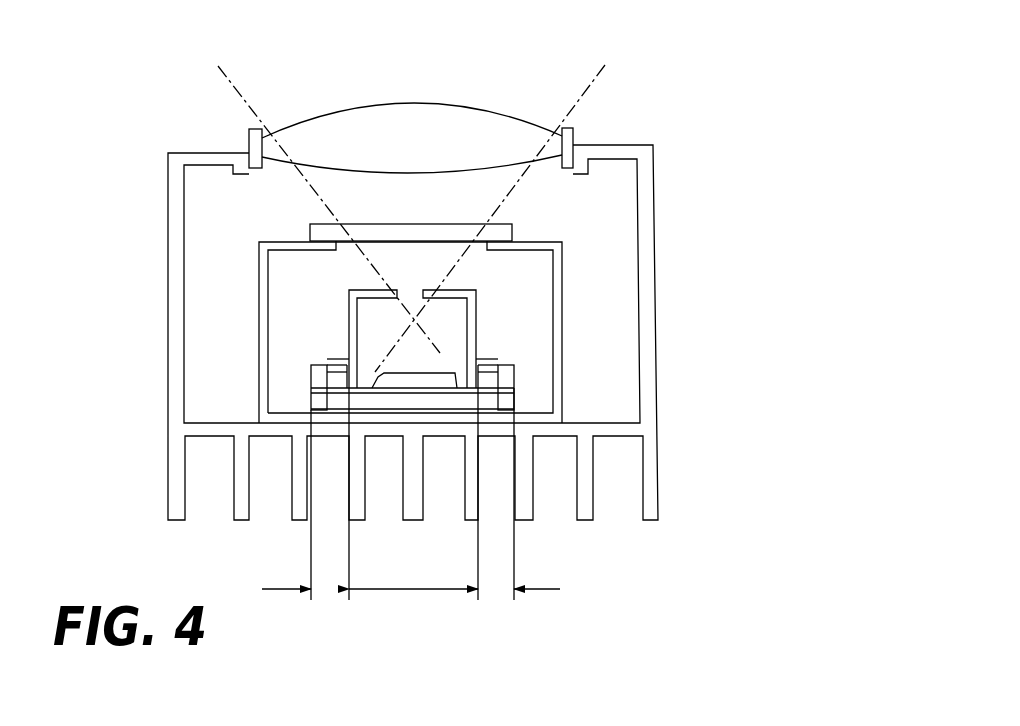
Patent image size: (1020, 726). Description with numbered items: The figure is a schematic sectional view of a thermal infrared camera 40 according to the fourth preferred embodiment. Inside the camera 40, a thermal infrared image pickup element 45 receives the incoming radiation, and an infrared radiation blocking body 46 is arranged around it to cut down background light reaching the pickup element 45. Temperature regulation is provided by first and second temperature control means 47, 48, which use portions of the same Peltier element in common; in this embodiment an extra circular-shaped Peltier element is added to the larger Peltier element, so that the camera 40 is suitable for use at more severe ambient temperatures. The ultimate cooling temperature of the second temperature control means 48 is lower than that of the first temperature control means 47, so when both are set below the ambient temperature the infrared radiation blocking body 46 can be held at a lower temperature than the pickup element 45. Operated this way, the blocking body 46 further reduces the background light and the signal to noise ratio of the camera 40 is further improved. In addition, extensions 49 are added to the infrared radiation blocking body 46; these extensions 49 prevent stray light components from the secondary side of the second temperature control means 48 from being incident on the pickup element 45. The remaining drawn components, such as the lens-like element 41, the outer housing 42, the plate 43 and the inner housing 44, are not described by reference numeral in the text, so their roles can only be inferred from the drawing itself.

The thermal infrared camera 40 is at (660, 69).
The lens 41 is at (475, 117).
The housing with heat sink 42 is at (642, 163).
The cover plate 43 is at (492, 216).
The inner housing 44 is at (555, 304).
The thermal infrared image pickup element 45 is at (427, 364).
The infrared radiation blocking body 46 is at (469, 310).
The first temperature control means 47 is at (405, 581).
The second temperature control means 48 is at (320, 582).
The extensions 49 is at (349, 374).